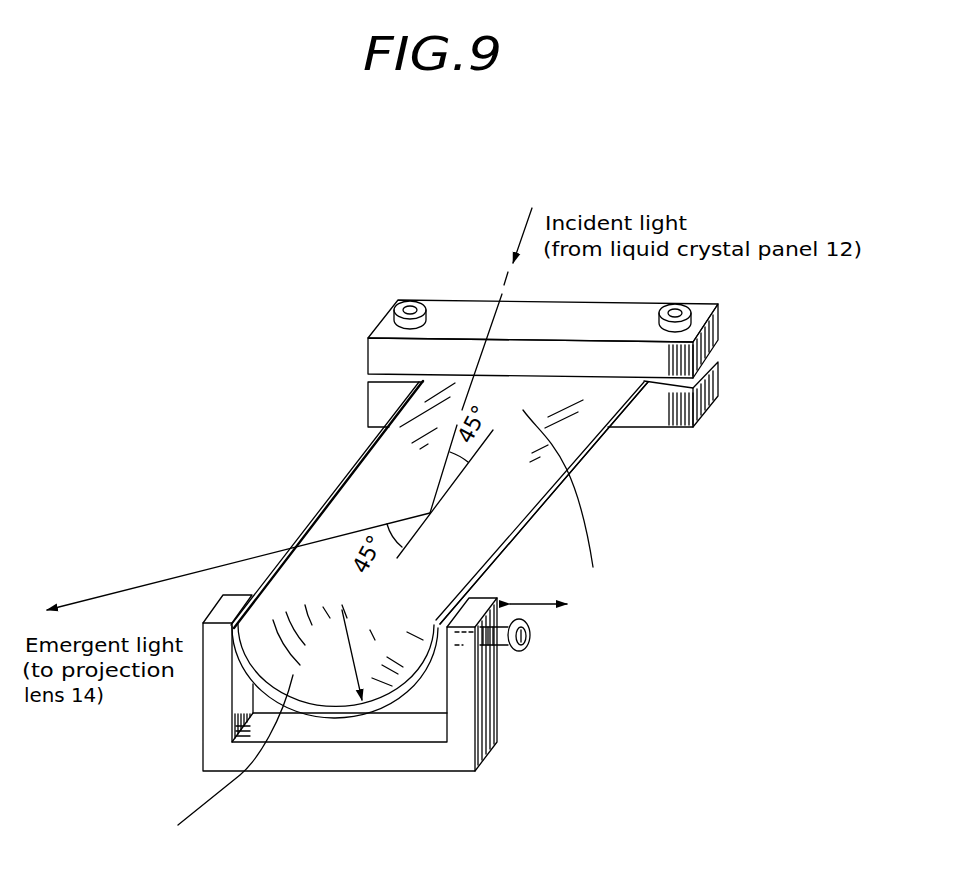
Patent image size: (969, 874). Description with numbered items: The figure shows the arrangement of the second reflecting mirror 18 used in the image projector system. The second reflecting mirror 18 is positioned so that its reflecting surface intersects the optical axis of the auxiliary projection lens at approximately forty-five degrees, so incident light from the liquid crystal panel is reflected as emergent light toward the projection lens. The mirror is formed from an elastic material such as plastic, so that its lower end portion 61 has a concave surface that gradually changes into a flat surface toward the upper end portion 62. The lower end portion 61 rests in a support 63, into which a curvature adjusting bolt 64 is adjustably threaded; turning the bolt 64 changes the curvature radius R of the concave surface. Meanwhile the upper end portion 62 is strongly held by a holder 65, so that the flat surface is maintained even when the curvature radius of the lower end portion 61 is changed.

The second reflecting mirror 18 is at (340, 462).
The lower end portion 61 is at (347, 717).
The upper end portion 62 is at (644, 381).
The support 63 is at (488, 708).
The curvature adjusting bolt 64 is at (532, 638).
The holder 65 is at (718, 330).